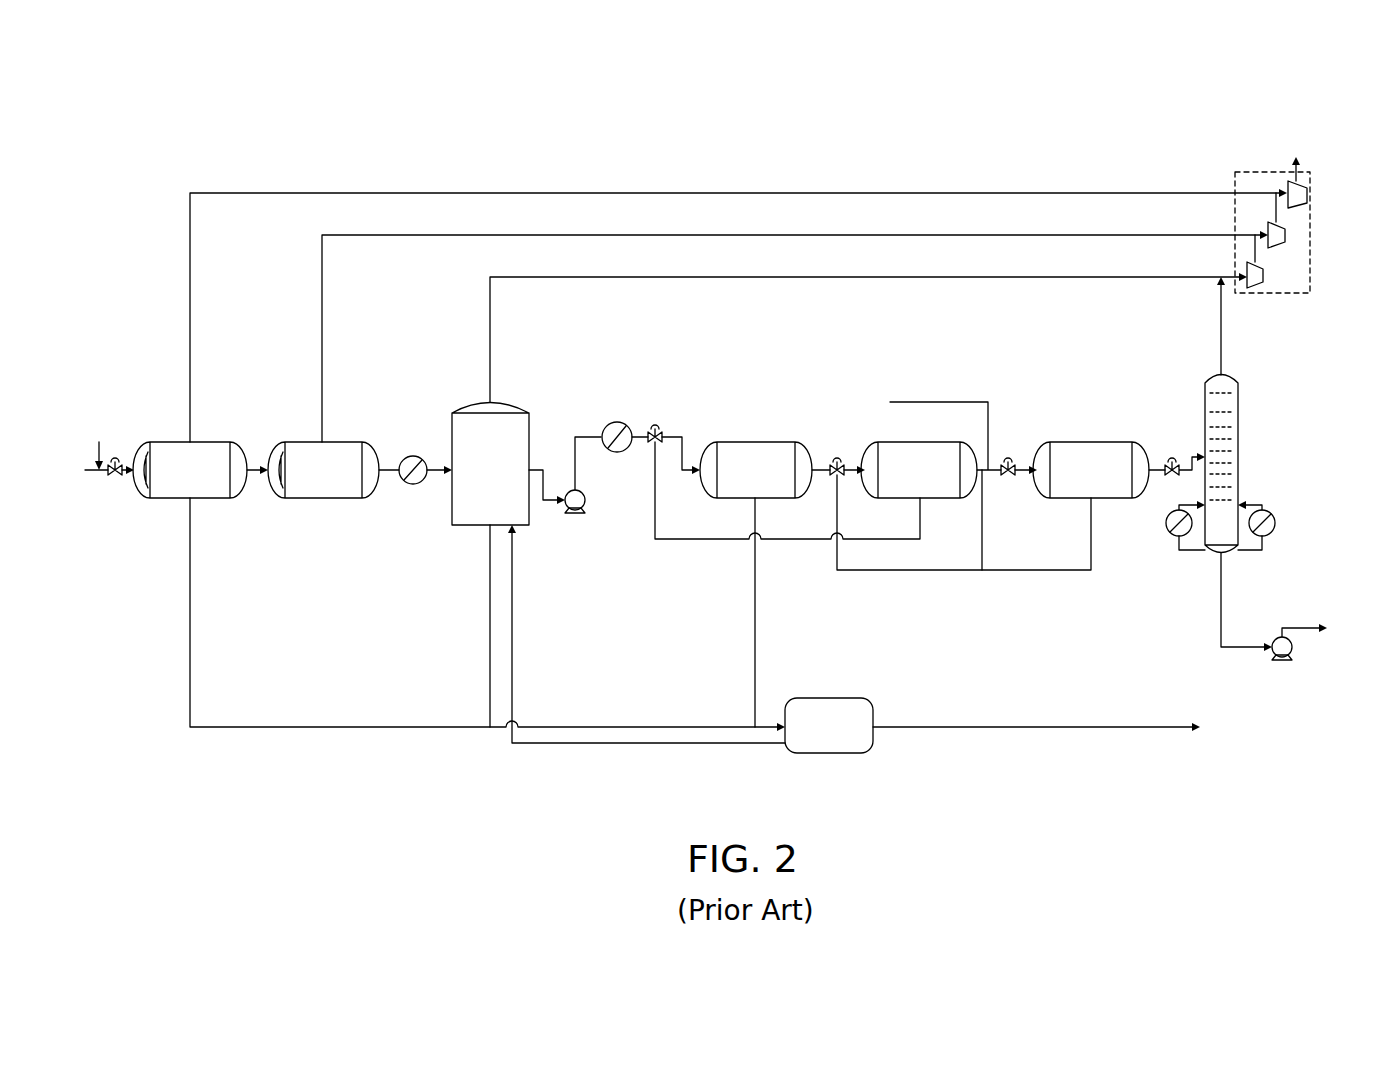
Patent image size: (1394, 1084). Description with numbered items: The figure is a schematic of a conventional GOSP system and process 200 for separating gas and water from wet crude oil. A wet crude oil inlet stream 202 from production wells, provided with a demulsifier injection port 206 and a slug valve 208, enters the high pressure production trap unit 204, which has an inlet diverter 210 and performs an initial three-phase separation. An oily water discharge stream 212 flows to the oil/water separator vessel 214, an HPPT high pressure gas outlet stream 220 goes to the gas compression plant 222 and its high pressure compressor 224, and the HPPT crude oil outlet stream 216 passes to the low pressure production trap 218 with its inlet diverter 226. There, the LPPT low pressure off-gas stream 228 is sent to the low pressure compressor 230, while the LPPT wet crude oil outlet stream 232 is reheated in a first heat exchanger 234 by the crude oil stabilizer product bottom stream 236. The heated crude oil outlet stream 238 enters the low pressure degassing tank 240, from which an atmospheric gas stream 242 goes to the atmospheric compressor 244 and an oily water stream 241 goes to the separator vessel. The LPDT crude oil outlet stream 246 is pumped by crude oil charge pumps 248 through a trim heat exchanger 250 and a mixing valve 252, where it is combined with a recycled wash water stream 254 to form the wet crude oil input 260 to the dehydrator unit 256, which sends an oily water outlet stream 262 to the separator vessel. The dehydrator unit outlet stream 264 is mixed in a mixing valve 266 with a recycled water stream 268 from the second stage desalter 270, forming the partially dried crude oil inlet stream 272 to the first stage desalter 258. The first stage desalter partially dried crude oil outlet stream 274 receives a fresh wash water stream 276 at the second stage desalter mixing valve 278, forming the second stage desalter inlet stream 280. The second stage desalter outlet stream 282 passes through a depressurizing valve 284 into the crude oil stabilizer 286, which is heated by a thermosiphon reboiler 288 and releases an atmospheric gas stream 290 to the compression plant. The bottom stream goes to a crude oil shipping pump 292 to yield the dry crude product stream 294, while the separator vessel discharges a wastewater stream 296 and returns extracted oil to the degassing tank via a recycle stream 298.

The conventional GOSP system and process 200 is at (946, 132).
The wet crude oil inlet stream 202 is at (69, 472).
The high pressure production trap unit 204 is at (184, 470).
The demulsifier injection port 206 is at (97, 456).
The slug valve 208 is at (115, 482).
The inlet diverter 210 is at (144, 452).
The oily water discharge stream 212 is at (190, 568).
The oil/water separator vessel 214 is at (829, 725).
The HPPT crude oil outlet stream 216 is at (252, 478).
The low pressure production trap 218 is at (323, 470).
The HPPT high pressure gas outlet stream 220 is at (290, 192).
The gas compression plant 222 is at (1257, 170).
The high pressure compressor 224 is at (1298, 206).
The inlet diverter 226 is at (279, 452).
The LPPT low pressure off-gas stream 228 is at (322, 280).
The low pressure compressor 230 is at (1278, 246).
The LPPT wet crude oil outlet stream 232 is at (395, 466).
The first heat exchanger 234 is at (413, 486).
The crude oil stabilizer product bottom stream 236 is at (1221, 620).
The heated crude oil outlet stream 238 is at (438, 464).
The low pressure degassing tank 240 is at (490, 464).
The oily water stream 241 is at (490, 680).
The atmospheric gas stream 242 is at (490, 332).
The atmospheric compressor 244 is at (1255, 289).
The LPDT crude oil outlet stream 246 is at (543, 440).
The crude oil charge pumps 248 is at (577, 514).
The trim heat exchanger 250 is at (614, 454).
The mixing valve 252 is at (655, 424).
The recycled wash water stream 254 is at (733, 541).
The dehydrator unit 256 is at (756, 470).
The first stage desalter 258 is at (919, 470).
The wet crude oil input 260 is at (675, 436).
The oily water outlet stream 262 is at (755, 683).
The dehydrator unit outlet stream 264 is at (822, 460).
The mixing valve 266 is at (838, 458).
The recycled water stream 268 is at (920, 572).
The second stage desalter 270 is at (1091, 470).
The partially dried crude oil inlet stream 272 is at (855, 466).
The first stage desalter partially dried crude oil outlet stream 274 is at (982, 515).
The fresh wash water stream 276 is at (992, 400).
The second stage desalter mixing valve 278 is at (1010, 458).
The second stage desalter inlet stream 280 is at (1022, 475).
The second stage desalter outlet stream 282 is at (1155, 466).
The depressurizing valve 284 is at (1172, 460).
The crude oil stabilizer 286 is at (1240, 490).
The thermosiphon reboiler 288 is at (1277, 523).
The atmospheric gas stream 290 is at (1222, 340).
The crude oil shipping pump 292 is at (1282, 662).
The dry crude product stream 294 is at (1302, 626).
The wastewater stream 296 is at (1165, 732).
The recycle stream 298 is at (512, 680).